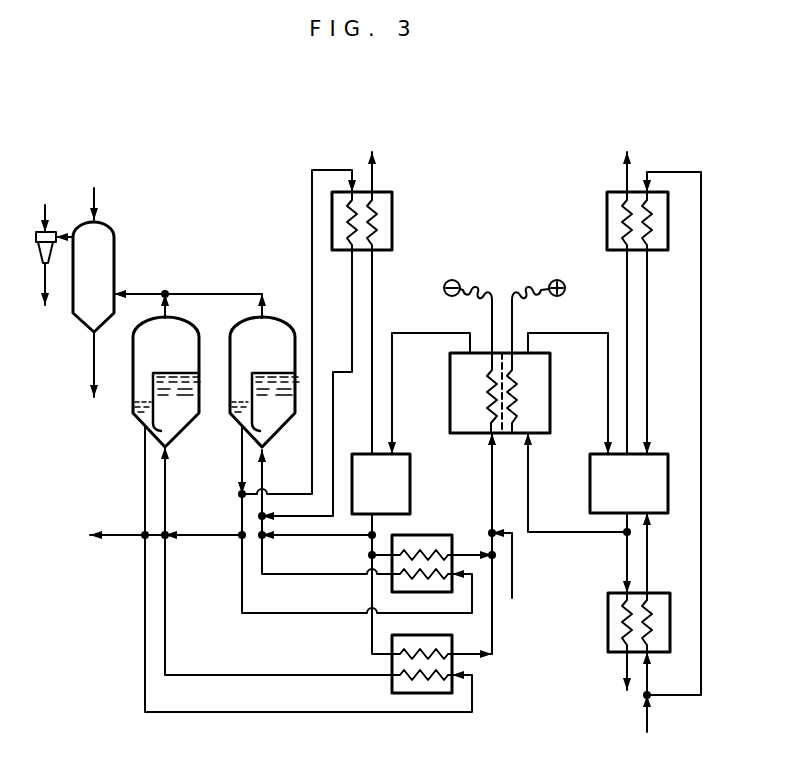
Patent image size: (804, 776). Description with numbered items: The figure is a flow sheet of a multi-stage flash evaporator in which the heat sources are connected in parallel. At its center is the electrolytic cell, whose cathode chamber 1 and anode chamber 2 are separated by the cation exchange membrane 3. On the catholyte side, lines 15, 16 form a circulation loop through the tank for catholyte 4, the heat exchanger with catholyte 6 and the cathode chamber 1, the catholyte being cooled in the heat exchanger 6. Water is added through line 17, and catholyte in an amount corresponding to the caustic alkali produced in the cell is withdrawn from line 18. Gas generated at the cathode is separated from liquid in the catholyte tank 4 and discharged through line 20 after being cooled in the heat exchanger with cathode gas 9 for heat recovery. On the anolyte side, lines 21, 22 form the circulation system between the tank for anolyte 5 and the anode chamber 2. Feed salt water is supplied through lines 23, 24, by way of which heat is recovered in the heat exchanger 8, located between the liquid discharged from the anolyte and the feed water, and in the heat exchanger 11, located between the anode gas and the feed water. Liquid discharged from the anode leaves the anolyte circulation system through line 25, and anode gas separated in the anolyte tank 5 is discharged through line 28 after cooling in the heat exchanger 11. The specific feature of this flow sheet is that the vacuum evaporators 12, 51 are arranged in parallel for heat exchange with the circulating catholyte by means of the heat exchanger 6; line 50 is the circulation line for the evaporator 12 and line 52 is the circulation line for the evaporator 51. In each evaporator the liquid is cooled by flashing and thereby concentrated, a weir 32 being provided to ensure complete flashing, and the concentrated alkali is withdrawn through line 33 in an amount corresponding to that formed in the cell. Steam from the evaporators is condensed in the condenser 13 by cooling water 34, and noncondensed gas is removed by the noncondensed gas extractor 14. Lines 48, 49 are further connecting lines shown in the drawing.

The cathode chamber 1 is at (497, 356).
The anode chamber 2 is at (536, 356).
The cation exchange membrane 3 is at (502, 433).
The tank for catholyte 4 is at (381, 484).
The tank for anolyte 5 is at (629, 483).
The heat exchanger with catholyte 6 is at (429, 533).
The heat exchanger between anolyte discharge and saltous water 8 is at (666, 593).
The heat exchanger with cathode gas 9 is at (392, 199).
The heat exchanger between anode gas and saltous water 11 is at (607, 206).
The vacuum evaporator 12 is at (262, 382).
The condenser 13 is at (93, 309).
The noncondensed gas extractor 14 is at (53, 258).
The catholyte circulation line 15 is at (491, 470).
The catholyte circulation line 16 is at (419, 335).
The water addition line 17 is at (509, 580).
The catholyte withdrawal line 18 is at (297, 536).
The cathode gas discharge line 20 is at (372, 159).
The anolyte circulation line 21 is at (547, 534).
The anolyte circulation line 22 is at (575, 336).
The feed salt water supply line 23 is at (650, 670).
The feed salt water supply line 24 is at (701, 393).
The anolyte discharge line 25 is at (627, 689).
The anode gas discharge line 28 is at (625, 159).
The weir 32 is at (217, 402).
The concentrated alkali withdrawal line 33 is at (112, 536).
The cooling water 34 is at (94, 192).
The line 48 is at (310, 271).
The line 49 is at (208, 532).
The circulation line for evaporator 12 50 is at (311, 613).
The vacuum evaporator 51 is at (166, 382).
The circulation line for evaporator 51 52 is at (311, 714).